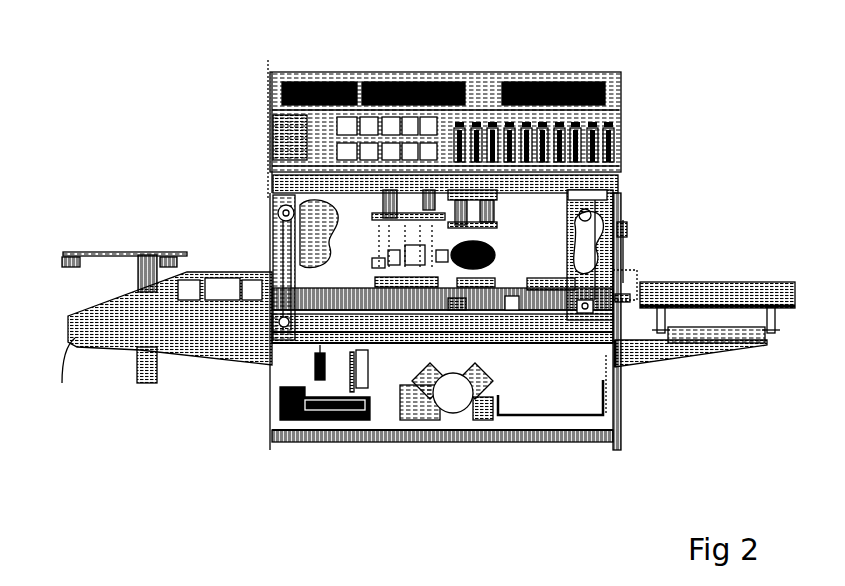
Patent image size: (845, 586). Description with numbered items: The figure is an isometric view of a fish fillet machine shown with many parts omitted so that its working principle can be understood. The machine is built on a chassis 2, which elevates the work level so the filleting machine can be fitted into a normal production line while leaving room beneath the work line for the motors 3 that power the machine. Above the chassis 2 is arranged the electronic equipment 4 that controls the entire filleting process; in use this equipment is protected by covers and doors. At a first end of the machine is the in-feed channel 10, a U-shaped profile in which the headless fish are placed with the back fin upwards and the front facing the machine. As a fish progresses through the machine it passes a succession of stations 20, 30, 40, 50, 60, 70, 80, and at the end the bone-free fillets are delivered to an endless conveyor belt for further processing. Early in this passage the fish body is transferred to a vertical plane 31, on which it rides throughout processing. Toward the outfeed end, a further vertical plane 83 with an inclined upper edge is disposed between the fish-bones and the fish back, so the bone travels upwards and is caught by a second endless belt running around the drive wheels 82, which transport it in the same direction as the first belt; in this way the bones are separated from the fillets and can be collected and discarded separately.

The chassis 2 is at (618, 407).
The motors 3 is at (355, 420).
The electronic equipment 4 is at (482, 112).
The in-feed channel 10 is at (747, 275).
The station 20 is at (627, 263).
The station 30 is at (513, 300).
The vertical plane 31 is at (457, 305).
The station 40 is at (467, 273).
The station 50 is at (398, 310).
The station 60 is at (300, 213).
The station 70 is at (263, 178).
The station 80 is at (190, 250).
The drive wheels 82 is at (72, 263).
The vertical plane 83 is at (57, 381).